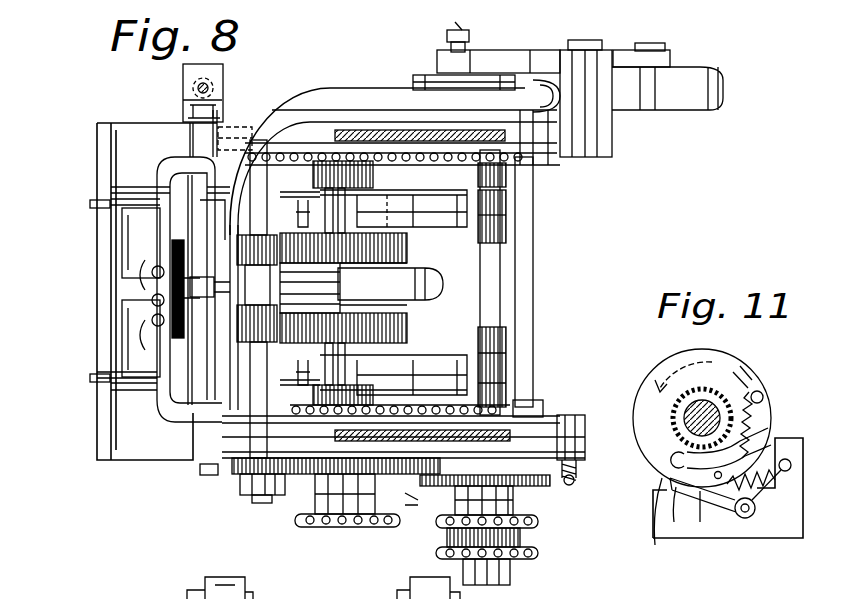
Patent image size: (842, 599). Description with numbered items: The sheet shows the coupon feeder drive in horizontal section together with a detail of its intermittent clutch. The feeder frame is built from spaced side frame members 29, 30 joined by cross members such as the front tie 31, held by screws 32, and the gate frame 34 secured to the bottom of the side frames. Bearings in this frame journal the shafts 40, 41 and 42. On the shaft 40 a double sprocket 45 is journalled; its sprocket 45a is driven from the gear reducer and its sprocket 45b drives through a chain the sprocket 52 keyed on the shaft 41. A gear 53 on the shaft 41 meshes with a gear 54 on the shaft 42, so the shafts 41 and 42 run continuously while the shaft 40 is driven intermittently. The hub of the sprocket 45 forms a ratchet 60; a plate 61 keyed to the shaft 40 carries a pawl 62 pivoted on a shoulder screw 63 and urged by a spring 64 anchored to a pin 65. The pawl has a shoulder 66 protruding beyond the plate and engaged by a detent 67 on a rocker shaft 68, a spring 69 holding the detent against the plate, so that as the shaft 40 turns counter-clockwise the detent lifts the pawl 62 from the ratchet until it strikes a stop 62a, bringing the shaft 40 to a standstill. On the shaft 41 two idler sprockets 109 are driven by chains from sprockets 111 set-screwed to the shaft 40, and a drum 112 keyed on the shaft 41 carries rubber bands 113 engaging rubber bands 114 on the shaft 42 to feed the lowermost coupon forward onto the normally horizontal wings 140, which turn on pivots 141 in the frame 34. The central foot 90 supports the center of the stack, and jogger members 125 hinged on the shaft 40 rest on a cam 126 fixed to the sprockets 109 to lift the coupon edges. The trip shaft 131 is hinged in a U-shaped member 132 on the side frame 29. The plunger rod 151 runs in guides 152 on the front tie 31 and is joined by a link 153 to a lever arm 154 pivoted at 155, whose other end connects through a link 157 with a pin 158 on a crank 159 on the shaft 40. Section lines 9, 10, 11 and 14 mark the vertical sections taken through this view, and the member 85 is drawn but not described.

In FIG. 8, the side frame member 29 is at (378, 130).
In FIG. 8, the side frame member 30 is at (425, 412).
In FIG. 8, the front tie 31 is at (170, 421).
In FIG. 8, the screws 32 is at (232, 90).
In FIG. 8, the gate frame 34 is at (105, 432).
In FIG. 8, the shaft 40 is at (500, 293).
In FIG. 11, the shaft 40 is at (684, 418).
In FIG. 8, the shaft 41 is at (358, 531).
In FIG. 8, the shaft 42 is at (262, 364).
In FIG. 8, the double sprocket 45 is at (437, 542).
In FIG. 8, the sprocket 45a is at (538, 541).
In FIG. 8, the sprocket 45b is at (538, 520).
In FIG. 8, the sprocket 52 is at (320, 534).
In FIG. 8, the gear 53 is at (400, 462).
In FIG. 8, the gear 54 is at (234, 476).
In FIG. 8, the ratchet 60 is at (434, 500).
In FIG. 11, the ratchet 60 is at (705, 395).
In FIG. 8, the plate 61 is at (424, 491).
In FIG. 11, the plate 61 is at (742, 376).
In FIG. 11, the pawl 62 is at (765, 442).
In FIG. 11, the stop 62a is at (668, 482).
In FIG. 11, the shoulder screw 63 is at (668, 462).
In FIG. 11, the spring 64 is at (750, 420).
In FIG. 11, the pin 65 is at (760, 392).
In FIG. 11, the shoulder 66 is at (665, 517).
In FIG. 11, the detent 67 is at (692, 511).
In FIG. 8, the rocker shaft 68 is at (527, 230).
In FIG. 11, the rocker shaft 68 is at (745, 519).
In FIG. 11, the spring 69 is at (728, 488).
In FIG. 8, the clamp 85 is at (323, 588).
In FIG. 8, the central foot 90 is at (361, 288).
In FIG. 8, the idler sprockets 109 is at (388, 161).
In FIG. 8, the sprockets 111 is at (530, 163).
In FIG. 8, the drum 112 is at (392, 266).
In FIG. 8, the rubber bands 113 is at (407, 245).
In FIG. 8, the rubber bands 114 is at (255, 272).
In FIG. 8, the jogger members 125 is at (430, 205).
In FIG. 8, the cam 126 is at (304, 200).
In FIG. 8, the shaft 131 is at (190, 90).
In FIG. 8, the U-shaped member 132 is at (185, 101).
In FIG. 8, the wings 140 is at (128, 240).
In FIG. 8, the pivots 141 is at (92, 204).
In FIG. 8, the rod 151 is at (185, 285).
In FIG. 8, the guides 152 is at (178, 326).
In FIG. 8, the link 153 is at (205, 275).
In FIG. 8, the lever arm 154 is at (288, 97).
In FIG. 8, the pivot 155 is at (612, 132).
In FIG. 8, the link 157 is at (548, 56).
In FIG. 8, the pin 158 is at (456, 82).
In FIG. 8, the crank 159 is at (424, 72).
In FIG. 8, the section line 9 is at (340, 97).
In FIG. 8, the section line 10 is at (478, 60).
In FIG. 8, the section line 11 is at (440, 500).
In FIG. 8, the section line 14 is at (100, 283).